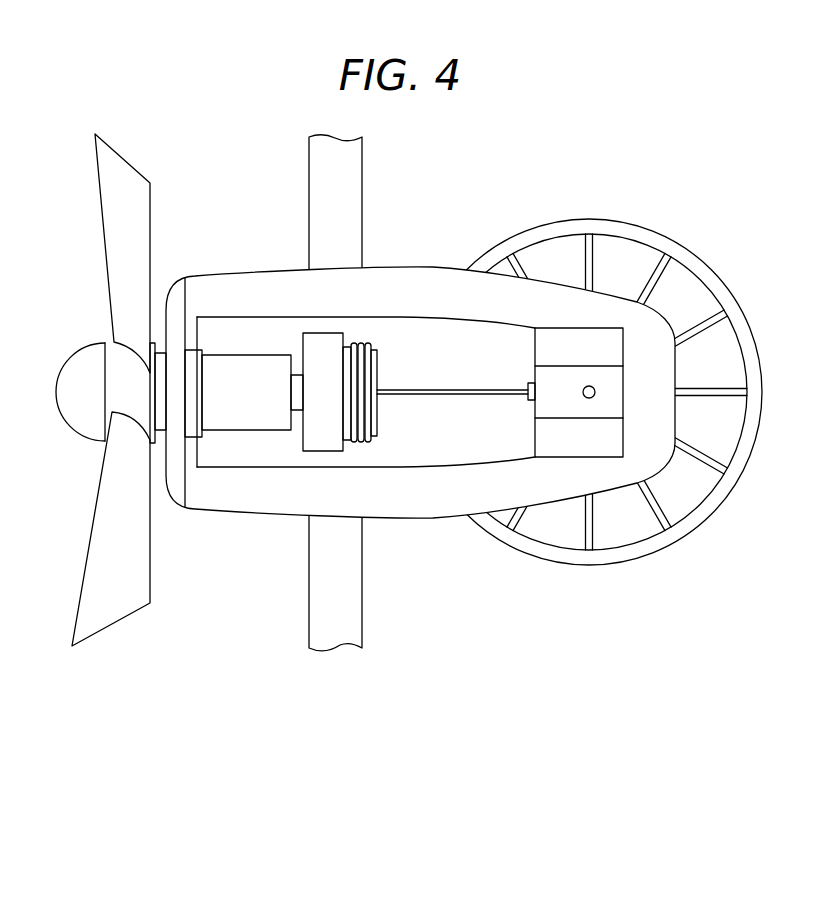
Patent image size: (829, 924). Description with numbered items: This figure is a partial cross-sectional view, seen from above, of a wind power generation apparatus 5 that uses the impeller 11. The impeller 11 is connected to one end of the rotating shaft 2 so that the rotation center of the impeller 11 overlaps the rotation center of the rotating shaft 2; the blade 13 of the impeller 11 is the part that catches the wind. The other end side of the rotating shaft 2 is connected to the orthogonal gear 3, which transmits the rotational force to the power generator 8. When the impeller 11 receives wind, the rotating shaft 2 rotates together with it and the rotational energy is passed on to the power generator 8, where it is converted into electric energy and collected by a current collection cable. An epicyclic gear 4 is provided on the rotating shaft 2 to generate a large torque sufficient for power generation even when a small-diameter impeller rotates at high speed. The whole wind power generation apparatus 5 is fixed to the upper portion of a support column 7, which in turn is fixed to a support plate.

The rotating shaft 2 is at (443, 388).
The orthogonal gear 3 is at (573, 458).
The epicyclic gear 4 is at (370, 437).
The wind power generation apparatus 5 is at (248, 697).
The support column 7 is at (352, 615).
The power generator 8 is at (650, 555).
The impeller 11 is at (87, 419).
The blade 13 is at (110, 630).